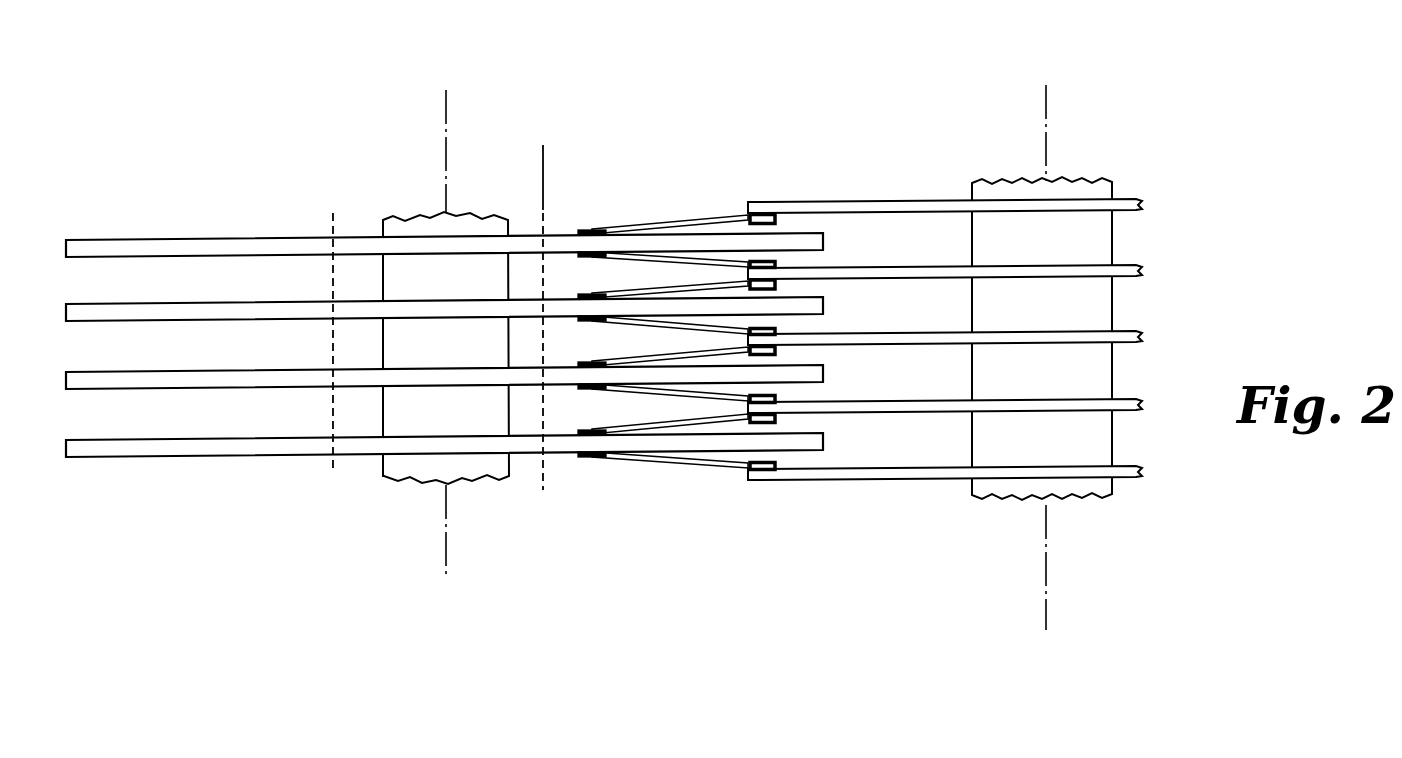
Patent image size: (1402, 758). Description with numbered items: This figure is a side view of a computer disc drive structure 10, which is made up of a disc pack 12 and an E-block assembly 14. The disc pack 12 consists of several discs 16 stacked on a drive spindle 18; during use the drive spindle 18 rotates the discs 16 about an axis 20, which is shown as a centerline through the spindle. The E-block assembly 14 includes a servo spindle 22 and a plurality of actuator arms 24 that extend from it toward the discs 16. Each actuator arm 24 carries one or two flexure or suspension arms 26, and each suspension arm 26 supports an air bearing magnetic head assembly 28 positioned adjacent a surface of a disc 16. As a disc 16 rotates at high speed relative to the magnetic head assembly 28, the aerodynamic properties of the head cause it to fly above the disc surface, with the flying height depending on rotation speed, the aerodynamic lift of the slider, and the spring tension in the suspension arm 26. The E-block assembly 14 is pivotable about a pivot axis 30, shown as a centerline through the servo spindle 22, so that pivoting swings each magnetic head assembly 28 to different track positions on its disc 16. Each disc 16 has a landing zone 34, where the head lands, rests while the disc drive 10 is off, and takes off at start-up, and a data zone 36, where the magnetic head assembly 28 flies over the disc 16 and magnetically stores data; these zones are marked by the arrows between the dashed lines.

The disc drive structure 10 is at (631, 241).
The disc pack 12 is at (444, 293).
The E-block assembly 14 is at (945, 267).
The discs 16 is at (134, 241).
The drive spindle 18 is at (408, 232).
The axis 20 is at (447, 99).
The servo spindle 22 is at (1100, 243).
The actuator arms 24 is at (835, 201).
The suspension arms 26 is at (668, 223).
The magnetic head assembly 28 is at (578, 231).
The pivot axis 30 is at (1047, 107).
The landing zone 34 is at (543, 188).
The data zone 36 is at (583, 194).